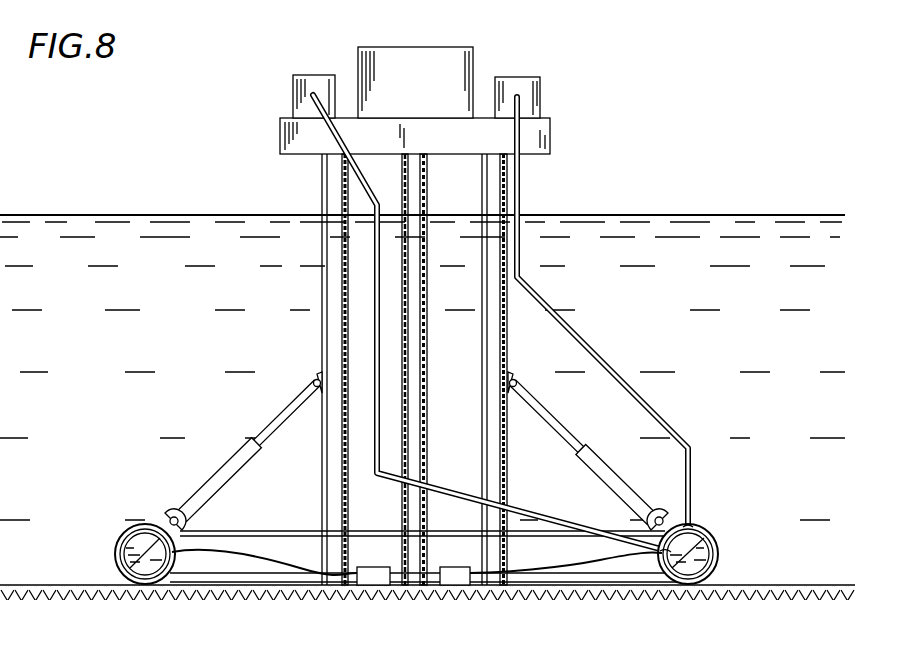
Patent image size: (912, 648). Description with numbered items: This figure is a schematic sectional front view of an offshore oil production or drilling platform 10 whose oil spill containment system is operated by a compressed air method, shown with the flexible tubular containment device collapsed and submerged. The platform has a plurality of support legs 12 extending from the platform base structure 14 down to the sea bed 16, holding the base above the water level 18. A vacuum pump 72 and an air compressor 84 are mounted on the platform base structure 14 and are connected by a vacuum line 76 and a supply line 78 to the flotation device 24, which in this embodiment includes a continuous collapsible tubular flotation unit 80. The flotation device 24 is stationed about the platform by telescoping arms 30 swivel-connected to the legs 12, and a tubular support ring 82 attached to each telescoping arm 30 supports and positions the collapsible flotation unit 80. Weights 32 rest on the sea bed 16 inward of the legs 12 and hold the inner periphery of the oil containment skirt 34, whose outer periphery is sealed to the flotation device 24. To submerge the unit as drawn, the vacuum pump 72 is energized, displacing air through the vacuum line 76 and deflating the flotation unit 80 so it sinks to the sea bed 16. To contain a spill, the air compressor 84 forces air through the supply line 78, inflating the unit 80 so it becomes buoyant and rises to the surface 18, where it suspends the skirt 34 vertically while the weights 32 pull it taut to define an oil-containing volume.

The offshore oil production or drilling platform 10 is at (398, 47).
The support legs 12 is at (427, 328).
The platform base structure 14 is at (548, 132).
The sea bed 16 is at (834, 585).
The water level 18 is at (727, 215).
The tubular flotation device 24 is at (716, 538).
The telescoping arms 30 is at (220, 462).
The weights 32 is at (370, 585).
The oil containment skirt 34 is at (248, 553).
The vacuum pump 72 is at (293, 82).
The vacuum line 76 is at (372, 255).
The supply line 78 is at (520, 262).
The collapsible tubular flotation unit 80 is at (716, 565).
The tubular support ring 82 is at (700, 512).
The air compressor 84 is at (532, 87).